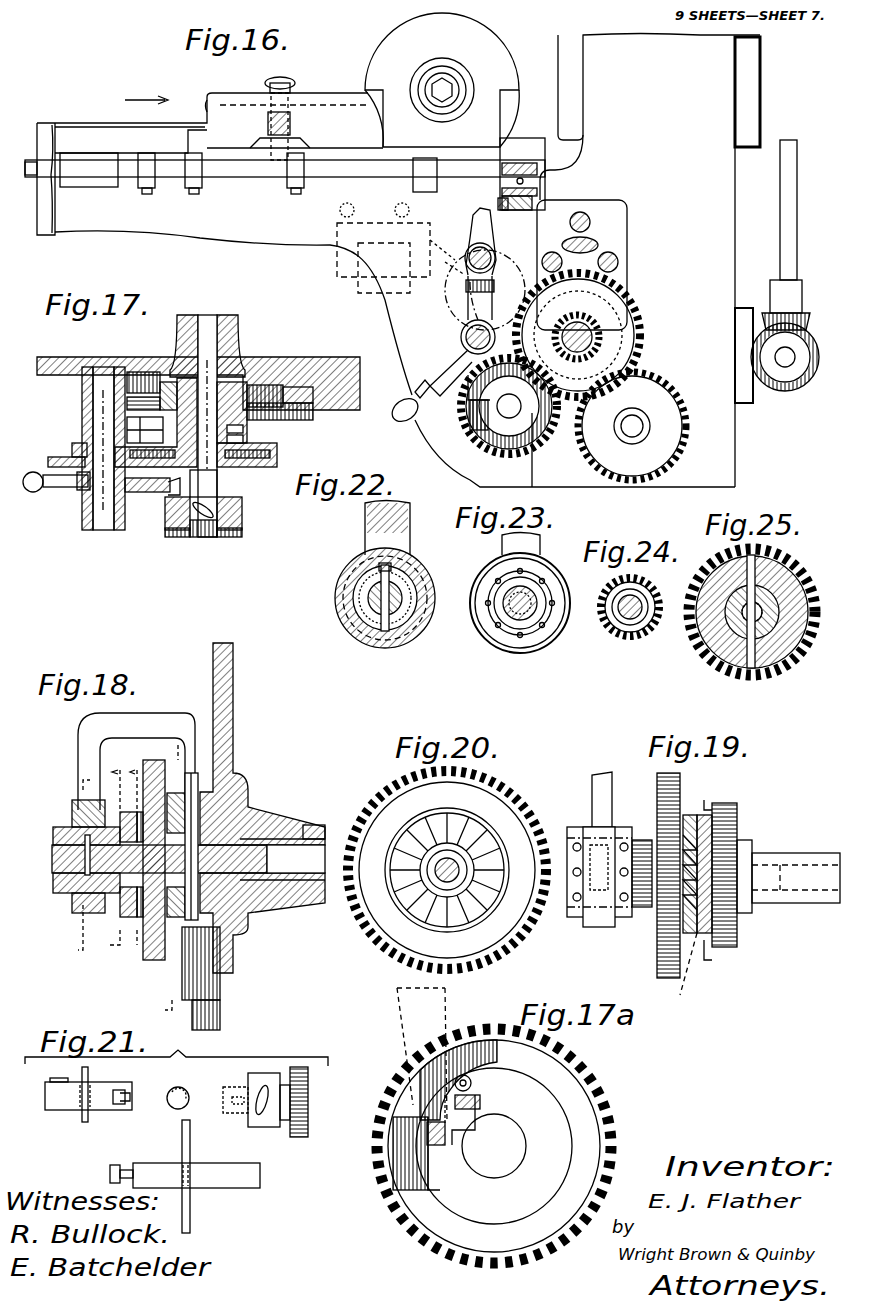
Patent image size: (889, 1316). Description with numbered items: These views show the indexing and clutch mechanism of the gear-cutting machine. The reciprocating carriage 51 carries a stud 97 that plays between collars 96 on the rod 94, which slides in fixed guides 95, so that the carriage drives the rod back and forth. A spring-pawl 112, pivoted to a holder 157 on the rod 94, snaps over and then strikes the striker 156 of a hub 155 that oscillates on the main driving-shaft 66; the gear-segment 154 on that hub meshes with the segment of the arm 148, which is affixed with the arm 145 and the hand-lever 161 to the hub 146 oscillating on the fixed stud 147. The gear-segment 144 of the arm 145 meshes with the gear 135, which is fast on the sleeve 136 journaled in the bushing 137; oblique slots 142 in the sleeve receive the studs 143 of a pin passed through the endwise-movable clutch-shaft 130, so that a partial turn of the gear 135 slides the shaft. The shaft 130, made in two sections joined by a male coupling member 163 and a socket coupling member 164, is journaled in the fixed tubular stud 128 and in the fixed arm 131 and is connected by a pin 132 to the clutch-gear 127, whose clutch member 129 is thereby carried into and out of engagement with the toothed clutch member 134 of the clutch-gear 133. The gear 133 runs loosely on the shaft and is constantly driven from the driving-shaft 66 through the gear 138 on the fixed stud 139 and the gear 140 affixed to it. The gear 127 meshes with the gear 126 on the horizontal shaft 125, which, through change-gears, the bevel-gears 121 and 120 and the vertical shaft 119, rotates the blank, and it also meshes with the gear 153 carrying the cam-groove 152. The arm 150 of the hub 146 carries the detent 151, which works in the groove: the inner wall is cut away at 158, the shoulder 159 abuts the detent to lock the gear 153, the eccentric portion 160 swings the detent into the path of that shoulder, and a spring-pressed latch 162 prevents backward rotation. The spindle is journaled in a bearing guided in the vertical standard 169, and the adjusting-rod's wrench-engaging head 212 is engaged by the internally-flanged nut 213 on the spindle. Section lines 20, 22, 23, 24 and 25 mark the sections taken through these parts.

In FIG. 16, the reciprocating carriage 51 is at (210, 96).
In FIG. 16, the rod 94 is at (358, 178).
In FIG. 16, the fixed guides 95 is at (90, 180).
In FIG. 16, the collars 96 is at (200, 190).
In FIG. 16, the stud 97 is at (276, 157).
In FIG. 16, the spring-pawl 112 is at (505, 212).
In FIG. 16, the vertical shaft 119 is at (797, 230).
In FIG. 16, the bevel-gear 120 is at (786, 392).
In FIG. 16, the bevel-gear 121 is at (808, 316).
In FIG. 16, the horizontal shaft 125 is at (650, 420).
In FIG. 16, the gear 126 is at (680, 440).
In FIG. 17, the gear 126 is at (313, 415).
In FIG. 17, the clutch-gear 127 is at (260, 385).
In FIG. 25, the clutch-gear 127 is at (808, 580).
In FIG. 18, the clutch-gear 127 is at (248, 805).
In FIG. 19, the clutch-gear 127 is at (740, 818).
In FIG. 18, the fixed tubular stud 128 is at (255, 918).
In FIG. 17, the clutch member 129 is at (245, 430).
In FIG. 18, the clutch member 129 is at (195, 780).
In FIG. 19, the clutch member 129 is at (705, 815).
In FIG. 17, the clutch-shaft 130 is at (203, 530).
In FIG. 22, the clutch-shaft 130 is at (418, 601).
In FIG. 23, the clutch-shaft 130 is at (525, 620).
In FIG. 24, the clutch-shaft 130 is at (638, 618).
In FIG. 25, the clutch-shaft 130 is at (780, 614).
In FIG. 18, the clutch-shaft 130 is at (52, 861).
In FIG. 20, the clutch-shaft 130 is at (432, 880).
In FIG. 19, the clutch-shaft 130 is at (692, 850).
In FIG. 21, the clutch-shaft 130 is at (52, 1100).
In FIG. 18, the fixed arm 131 is at (78, 757).
In FIG. 25, the pin 132 is at (760, 570).
In FIG. 18, the pin 132 is at (185, 930).
In FIG. 19, the pin 132 is at (681, 973).
In FIG. 21, the pin 132 is at (190, 1140).
In FIG. 16, the clutch-gear 133 is at (630, 300).
In FIG. 17, the clutch-gear 133 is at (278, 452).
In FIG. 18, the clutch-gear 133 is at (155, 760).
In FIG. 20, the clutch-gear 133 is at (498, 790).
In FIG. 19, the clutch-gear 133 is at (660, 775).
In FIG. 16, the toothed clutch member 134 is at (578, 335).
In FIG. 17, the toothed clutch member 134 is at (245, 441).
In FIG. 18, the toothed clutch member 134 is at (176, 793).
In FIG. 20, the toothed clutch member 134 is at (485, 830).
In FIG. 19, the toothed clutch member 134 is at (688, 815).
In FIG. 16, the gear 135 is at (597, 328).
In FIG. 17, the gear 135 is at (232, 490).
In FIG. 24, the gear 135 is at (648, 590).
In FIG. 18, the gear 135 is at (128, 900).
In FIG. 19, the gear 135 is at (640, 910).
In FIG. 21, the gear 135 is at (300, 1137).
In FIG. 18, the sleeve 136 is at (85, 913).
In FIG. 21, the sleeve 136 is at (265, 1127).
In FIG. 17, the bushing 137 is at (226, 537).
In FIG. 23, the bushing 137 is at (548, 625).
In FIG. 18, the bushing 137 is at (53, 835).
In FIG. 17, the gear 138 is at (72, 447).
In FIG. 17, the fixed stud 139 is at (103, 528).
In FIG. 16, the gear 140 is at (386, 262).
In FIG. 17, the gear 140 is at (48, 462).
In FIG. 17, the oblique slots 142 is at (213, 537).
In FIG. 22, the oblique slots 142 is at (400, 580).
In FIG. 21, the oblique slots 142 is at (258, 1088).
In FIG. 17, the studs 143 is at (203, 483).
In FIG. 22, the studs 143 is at (372, 578).
In FIG. 18, the studs 143 is at (53, 883).
In FIG. 21, the studs 143 is at (88, 1071).
In FIG. 16, the gear-segment 144 is at (540, 330).
In FIG. 17, the gear-segment 144 is at (173, 492).
In FIG. 16, the arm 145 is at (514, 330).
In FIG. 16, the hub 146 is at (462, 332).
In FIG. 16, the fixed stud 147 is at (466, 344).
In FIG. 16, the arm 148 is at (468, 305).
In FIG. 17A, the arm 150 is at (402, 1014).
In FIG. 16, the detent 151 is at (470, 400).
In FIG. 17A, the detent 151 is at (428, 1132).
In FIG. 16, the cam-groove 152 is at (510, 455).
In FIG. 17A, the cam-groove 152 is at (580, 1130).
In FIG. 16, the gear 153 is at (545, 440).
In FIG. 17, the gear 153 is at (125, 400).
In FIG. 18, the gear 153 is at (220, 1018).
In FIG. 17A, the gear 153 is at (590, 1082).
In FIG. 16, the gear-segment 154 is at (440, 244).
In FIG. 16, the hub 155 is at (439, 264).
In FIG. 16, the striker 156 is at (472, 215).
In FIG. 16, the holder 157 is at (518, 163).
In FIG. 17A, the cut-away portion 158 is at (425, 1180).
In FIG. 16, the shoulder 159 is at (470, 430).
In FIG. 17A, the shoulder 159 is at (437, 1145).
In FIG. 17A, the eccentric portion 160 is at (425, 1080).
In FIG. 16, the hand-lever 161 is at (412, 388).
In FIG. 17, the hand-lever 161 is at (68, 488).
In FIG. 17A, the spring-pressed latch 162 is at (472, 1095).
In FIG. 21, the male coupling member 163 is at (122, 1165).
In FIG. 21, the socket coupling member 164 is at (125, 1100).
In FIG. 16, the vertical standard 169 is at (725, 180).
In FIG. 16, the wrench-engaging head 212 is at (415, 85).
In FIG. 16, the internally-flanged nut 213 is at (458, 86).
In FIG. 16, the main driving-shaft 66 is at (496, 258).
In FIG. 18, the section line 20 is at (172, 878).
In FIG. 18, the section line 22 is at (85, 866).
In FIG. 18, the section line 23 is at (116, 856).
In FIG. 18, the section line 24 is at (137, 855).
In FIG. 19, the section line 25 is at (706, 881).